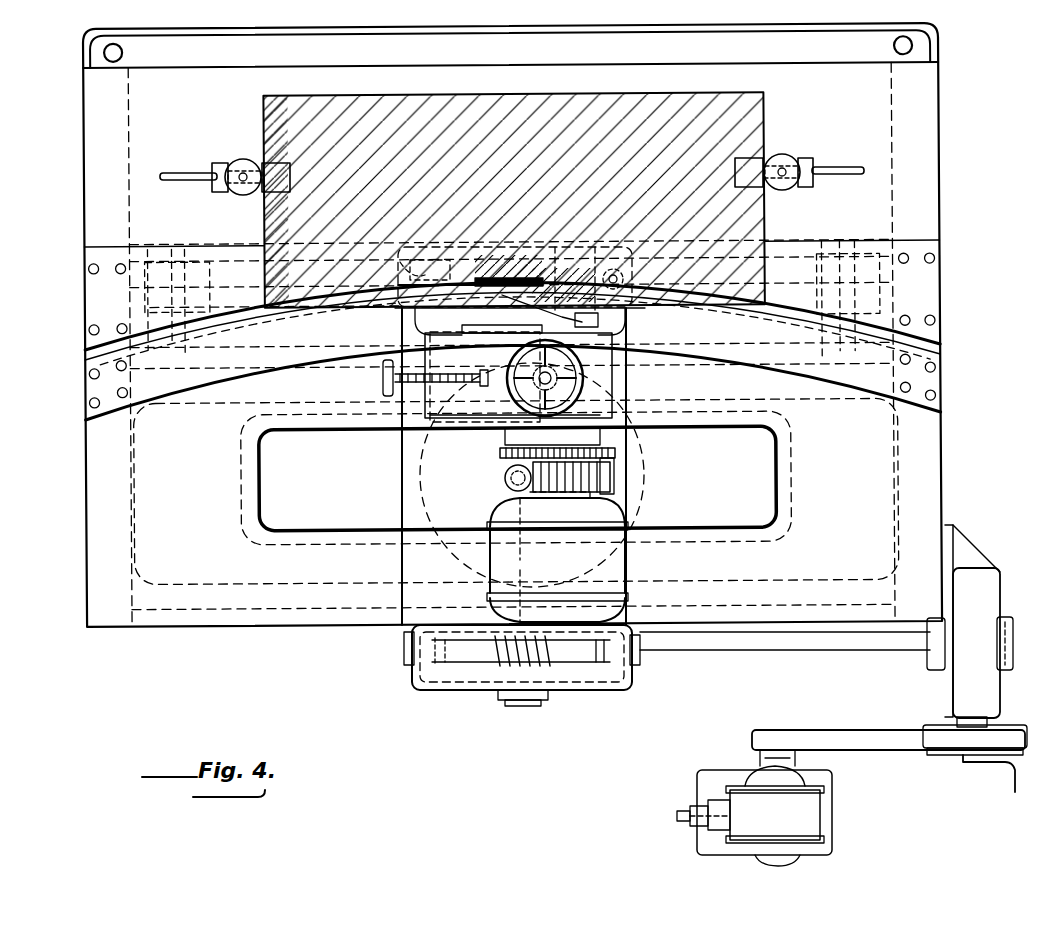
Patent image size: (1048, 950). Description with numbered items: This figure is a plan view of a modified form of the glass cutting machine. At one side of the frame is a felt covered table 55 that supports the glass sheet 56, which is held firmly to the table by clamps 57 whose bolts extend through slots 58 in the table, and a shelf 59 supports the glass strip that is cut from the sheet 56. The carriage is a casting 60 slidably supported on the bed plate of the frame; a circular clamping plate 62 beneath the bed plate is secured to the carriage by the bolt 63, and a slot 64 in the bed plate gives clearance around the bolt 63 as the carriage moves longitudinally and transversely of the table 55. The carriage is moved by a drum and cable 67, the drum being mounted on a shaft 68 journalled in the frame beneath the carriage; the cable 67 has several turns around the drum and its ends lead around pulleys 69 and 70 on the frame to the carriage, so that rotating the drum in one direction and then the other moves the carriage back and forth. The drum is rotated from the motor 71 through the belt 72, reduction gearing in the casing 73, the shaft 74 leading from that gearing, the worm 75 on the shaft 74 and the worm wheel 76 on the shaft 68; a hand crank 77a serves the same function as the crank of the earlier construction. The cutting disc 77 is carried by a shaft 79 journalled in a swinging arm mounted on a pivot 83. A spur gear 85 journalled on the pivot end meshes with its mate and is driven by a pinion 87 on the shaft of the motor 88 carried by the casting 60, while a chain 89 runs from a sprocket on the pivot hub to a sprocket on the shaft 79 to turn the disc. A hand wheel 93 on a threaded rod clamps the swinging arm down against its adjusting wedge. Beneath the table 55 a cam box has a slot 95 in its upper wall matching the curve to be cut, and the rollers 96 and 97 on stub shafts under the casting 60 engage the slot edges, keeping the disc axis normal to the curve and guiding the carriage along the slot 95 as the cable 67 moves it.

The felt covered table 55 is at (95, 244).
The glass sheet 56 is at (280, 120).
The clamps 57 is at (275, 178).
The slots 58 is at (178, 174).
The shelf 59 is at (195, 370).
The casting 60 is at (405, 451).
The circular clamping plate 62 is at (430, 502).
The bolt 63 is at (505, 487).
The slot 64 is at (298, 525).
The cable 67 is at (222, 288).
The shaft 68 is at (520, 702).
The pulley 69 is at (812, 270).
The pulley 70 is at (150, 297).
The motor 71 is at (805, 815).
The belt 72 is at (862, 733).
The casing 73 is at (988, 605).
The shaft 74 is at (755, 645).
The worm 75 is at (545, 660).
The worm wheel 76 is at (472, 663).
The cutting disc 77 is at (548, 278).
The hand crank 77a is at (980, 770).
The shaft 79 is at (505, 477).
The pivot 83 is at (612, 480).
The spur gear 85 is at (610, 470).
The pinion 87 is at (383, 378).
The motor 88 is at (612, 560).
The chain 89 is at (500, 452).
The hand wheel 93 is at (640, 322).
The slot 95 is at (358, 280).
The roller 96 is at (420, 268).
The roller 97 is at (600, 270).